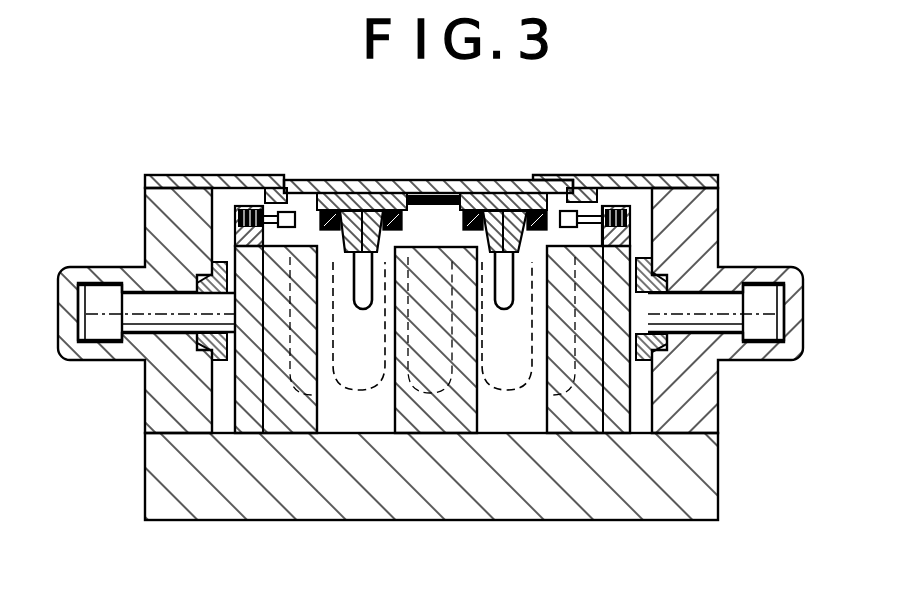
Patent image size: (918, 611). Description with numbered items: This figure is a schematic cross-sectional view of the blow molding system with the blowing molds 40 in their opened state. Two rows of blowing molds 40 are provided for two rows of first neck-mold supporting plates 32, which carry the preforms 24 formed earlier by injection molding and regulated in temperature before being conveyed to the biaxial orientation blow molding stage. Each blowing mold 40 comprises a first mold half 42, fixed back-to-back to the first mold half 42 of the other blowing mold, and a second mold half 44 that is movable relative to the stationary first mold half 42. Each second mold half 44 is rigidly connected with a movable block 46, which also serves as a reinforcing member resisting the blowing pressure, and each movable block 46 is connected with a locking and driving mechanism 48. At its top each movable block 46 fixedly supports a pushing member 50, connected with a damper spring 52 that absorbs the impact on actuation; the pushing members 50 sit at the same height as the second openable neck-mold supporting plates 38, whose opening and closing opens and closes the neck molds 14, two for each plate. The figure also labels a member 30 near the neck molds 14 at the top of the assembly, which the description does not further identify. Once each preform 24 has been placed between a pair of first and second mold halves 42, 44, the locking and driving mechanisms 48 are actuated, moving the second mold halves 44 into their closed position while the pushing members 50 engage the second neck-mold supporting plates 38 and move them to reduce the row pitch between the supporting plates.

The neck mold 14 is at (351, 193).
The preform 24 is at (514, 312).
The top plate 30 is at (518, 180).
The first neck-mold supporting plate 32 is at (373, 193).
The second openable neck-mold supporting plate 38 is at (324, 211).
The blowing mold 40 is at (352, 440).
The first mold half 42 is at (455, 415).
The second mold half 44 is at (288, 405).
The movable block 46 is at (222, 398).
The locking and driving mechanism 48 is at (762, 330).
The pushing member 50 is at (284, 212).
The damper spring 52 is at (240, 207).